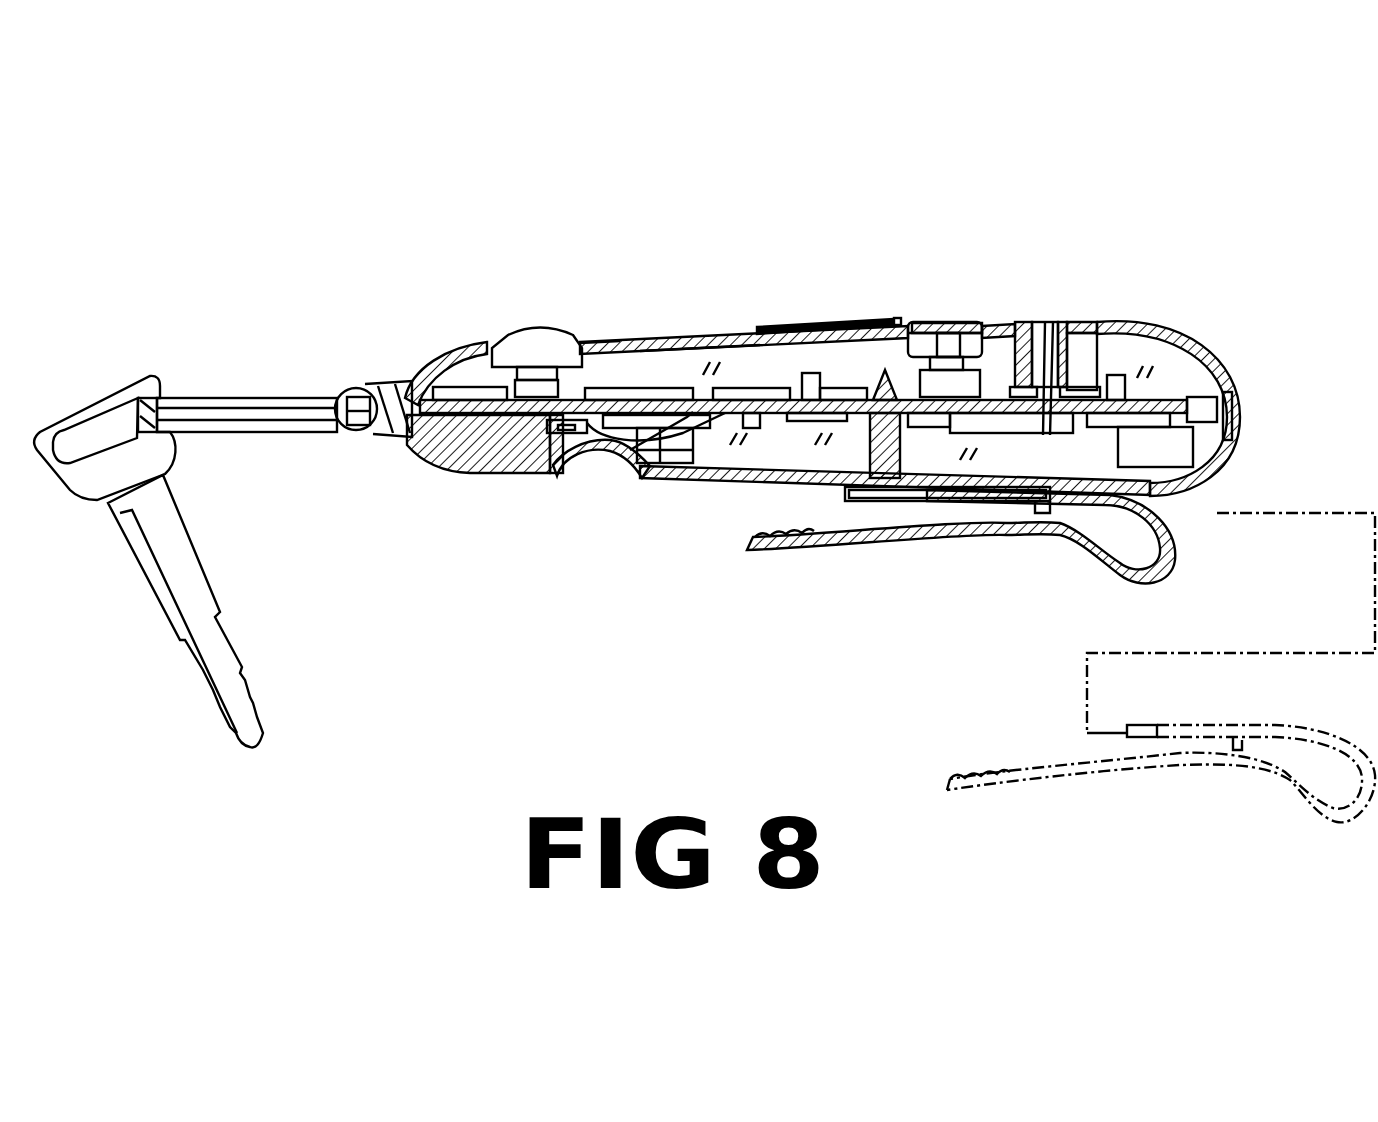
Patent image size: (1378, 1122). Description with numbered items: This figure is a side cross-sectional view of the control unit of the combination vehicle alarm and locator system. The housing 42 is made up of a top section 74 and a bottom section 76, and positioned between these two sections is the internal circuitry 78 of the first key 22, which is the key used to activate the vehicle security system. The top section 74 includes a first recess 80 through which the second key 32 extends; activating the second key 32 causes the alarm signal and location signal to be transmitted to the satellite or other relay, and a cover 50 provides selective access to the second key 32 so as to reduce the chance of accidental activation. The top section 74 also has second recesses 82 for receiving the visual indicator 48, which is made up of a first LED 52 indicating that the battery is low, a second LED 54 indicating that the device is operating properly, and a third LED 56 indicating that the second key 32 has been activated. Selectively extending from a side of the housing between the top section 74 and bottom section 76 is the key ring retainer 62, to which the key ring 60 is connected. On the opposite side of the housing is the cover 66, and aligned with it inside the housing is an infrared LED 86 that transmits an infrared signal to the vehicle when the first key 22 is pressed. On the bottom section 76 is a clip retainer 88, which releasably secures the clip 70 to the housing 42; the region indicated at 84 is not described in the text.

The key ring 60 is at (197, 398).
The key ring retainer 62 is at (373, 390).
The first key 22 is at (510, 333).
The housing top 84 is at (585, 318).
The top section 74 is at (656, 340).
The cover 50 is at (790, 323).
The first recess 80 is at (922, 305).
The second key 32 is at (943, 325).
The first LED 52 is at (1017, 325).
The second LED 54 is at (1045, 325).
The visual indicator 48 is at (1018, 325).
The third LED 56 is at (1078, 325).
The infrared LED 86 is at (1207, 417).
The cover 66 is at (1237, 415).
The second recesses 82 is at (1048, 399).
The clip retainer 88 is at (840, 493).
The bottom section 76 is at (630, 450).
The internal circuitry 78 is at (700, 413).
The clip 70 is at (1138, 583).
The housing 42 is at (1193, 497).